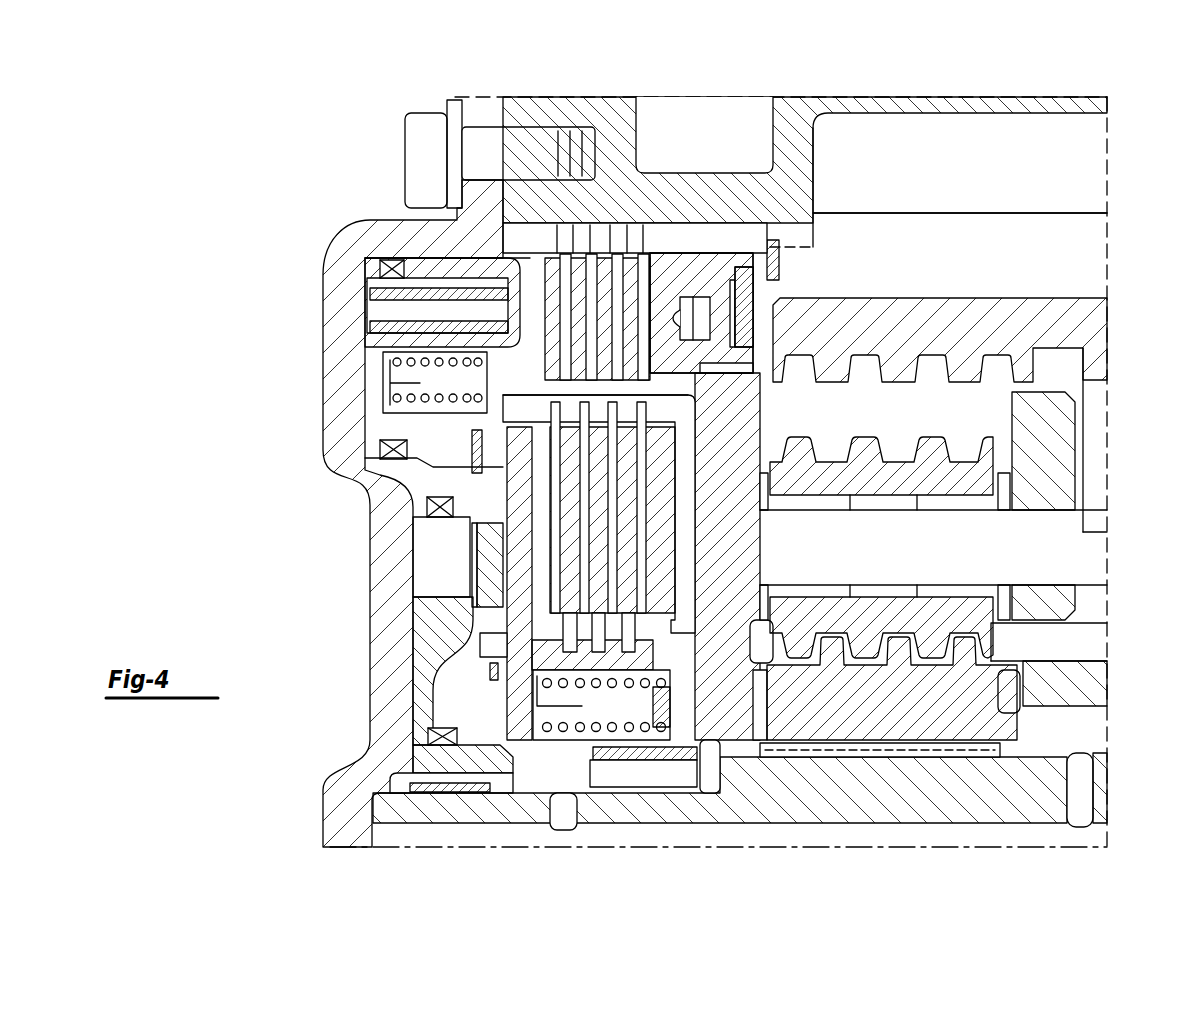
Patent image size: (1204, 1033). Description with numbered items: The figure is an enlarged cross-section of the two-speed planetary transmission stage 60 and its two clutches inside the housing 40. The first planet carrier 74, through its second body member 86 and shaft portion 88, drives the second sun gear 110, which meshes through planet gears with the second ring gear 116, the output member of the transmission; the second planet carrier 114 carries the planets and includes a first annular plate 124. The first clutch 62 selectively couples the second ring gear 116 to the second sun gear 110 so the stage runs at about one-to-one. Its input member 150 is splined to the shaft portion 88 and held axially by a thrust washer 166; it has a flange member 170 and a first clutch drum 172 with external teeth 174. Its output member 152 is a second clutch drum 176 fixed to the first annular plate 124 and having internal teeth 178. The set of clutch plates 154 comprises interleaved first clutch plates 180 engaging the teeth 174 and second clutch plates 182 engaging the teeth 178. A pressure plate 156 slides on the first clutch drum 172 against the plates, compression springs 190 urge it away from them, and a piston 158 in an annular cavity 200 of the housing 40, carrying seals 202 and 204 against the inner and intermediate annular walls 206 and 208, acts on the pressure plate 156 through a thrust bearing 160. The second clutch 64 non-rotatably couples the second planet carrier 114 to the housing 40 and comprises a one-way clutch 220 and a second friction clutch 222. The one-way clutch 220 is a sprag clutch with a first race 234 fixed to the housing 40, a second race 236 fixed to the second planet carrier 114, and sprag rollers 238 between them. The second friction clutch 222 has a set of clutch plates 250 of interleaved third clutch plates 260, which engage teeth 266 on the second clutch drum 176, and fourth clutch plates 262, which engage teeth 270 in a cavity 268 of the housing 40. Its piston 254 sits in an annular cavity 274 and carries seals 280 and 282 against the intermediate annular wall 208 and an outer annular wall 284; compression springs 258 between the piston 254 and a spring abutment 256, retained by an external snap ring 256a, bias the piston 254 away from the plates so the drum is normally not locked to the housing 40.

The housing 40 is at (337, 820).
The two-speed planetary transmission stage 60 is at (1045, 281).
The first clutch 62 is at (688, 460).
The second clutch 64 is at (995, 55).
The first planet carrier 74 is at (1050, 775).
The second body member 86 is at (1003, 797).
The shaft portion 88 is at (772, 815).
The second sun gear 110 is at (873, 710).
The second planet carrier 114 is at (1050, 443).
The second ring gear 116 is at (893, 322).
The first annular plate 124 is at (732, 487).
The input member 150 is at (665, 567).
The output member 152 is at (683, 290).
The set of clutch plates 154 is at (862, 513).
The pressure plate 156 is at (507, 713).
The piston 158 is at (465, 537).
The thrust bearing 160 is at (483, 560).
The thrust washer 166 is at (708, 767).
The flange member 170 is at (688, 690).
The first clutch drum 172 is at (602, 663).
The teeth 174 is at (693, 652).
The second clutch drum 176 is at (701, 313).
The internal teeth 178 is at (528, 412).
The first clutch plates 180 is at (628, 508).
The second clutch plates 182 is at (648, 542).
The compression springs 190 is at (565, 735).
The annular cavity 200 is at (418, 650).
The seal 202 is at (433, 743).
The seal 204 is at (418, 507).
The inner annular wall 206 is at (447, 760).
The intermediate annular wall 208 is at (355, 483).
The one-way clutch 220 is at (818, 254).
The second friction clutch 222 is at (725, 202).
The first race 234 is at (700, 217).
The second race 236 is at (725, 325).
The sprag rollers 238 is at (710, 318).
The set of clutch plates 250 is at (624, 55).
The piston 254 is at (415, 318).
The spring abutment 256 is at (477, 402).
The external snap ring 256a is at (470, 440).
The compression springs 258 is at (400, 367).
The third clutch plates 260 is at (560, 262).
The fourth clutch plates 262 is at (607, 268).
The teeth 266 is at (545, 383).
The cavity 268 is at (530, 262).
The teeth 270 is at (528, 242).
The annular cavity 274 is at (405, 337).
The seal 280 is at (378, 450).
The seal 282 is at (390, 268).
The outer annular wall 284 is at (393, 236).